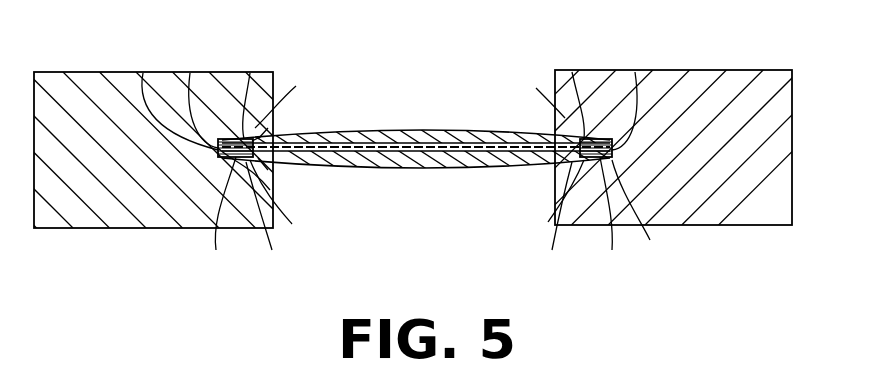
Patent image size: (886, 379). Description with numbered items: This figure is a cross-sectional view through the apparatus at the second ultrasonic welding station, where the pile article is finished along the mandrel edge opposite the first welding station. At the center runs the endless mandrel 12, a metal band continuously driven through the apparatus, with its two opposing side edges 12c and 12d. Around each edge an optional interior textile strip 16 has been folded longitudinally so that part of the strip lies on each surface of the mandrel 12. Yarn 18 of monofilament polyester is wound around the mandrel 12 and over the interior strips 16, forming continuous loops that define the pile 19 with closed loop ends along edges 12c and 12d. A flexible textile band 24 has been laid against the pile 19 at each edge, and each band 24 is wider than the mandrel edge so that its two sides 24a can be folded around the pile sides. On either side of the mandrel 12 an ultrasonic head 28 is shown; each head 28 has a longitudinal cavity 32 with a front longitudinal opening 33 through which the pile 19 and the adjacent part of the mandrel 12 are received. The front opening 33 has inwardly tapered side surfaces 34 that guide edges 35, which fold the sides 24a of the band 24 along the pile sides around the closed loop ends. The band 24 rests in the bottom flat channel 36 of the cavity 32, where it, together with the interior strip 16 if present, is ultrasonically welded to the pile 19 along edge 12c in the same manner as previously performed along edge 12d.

The endless mandrel 12 is at (410, 133).
The side edge of mandrel 12c is at (218, 150).
The side edge of mandrel 12d is at (612, 152).
The interior textile strip 16 is at (220, 158).
The yarn 18 is at (354, 133).
The pile 19 is at (476, 132).
The flexible textile band 24 is at (143, 73).
The side of band 24a is at (250, 73).
The ultrasonic head 28 is at (92, 72).
The longitudinal cavity 32 is at (409, 219).
The front longitudinal opening 33 is at (262, 136).
The inwardly tapered side surface 34 is at (268, 128).
The guide edge 35 is at (417, 156).
The bottom flat channel 36 is at (190, 73).